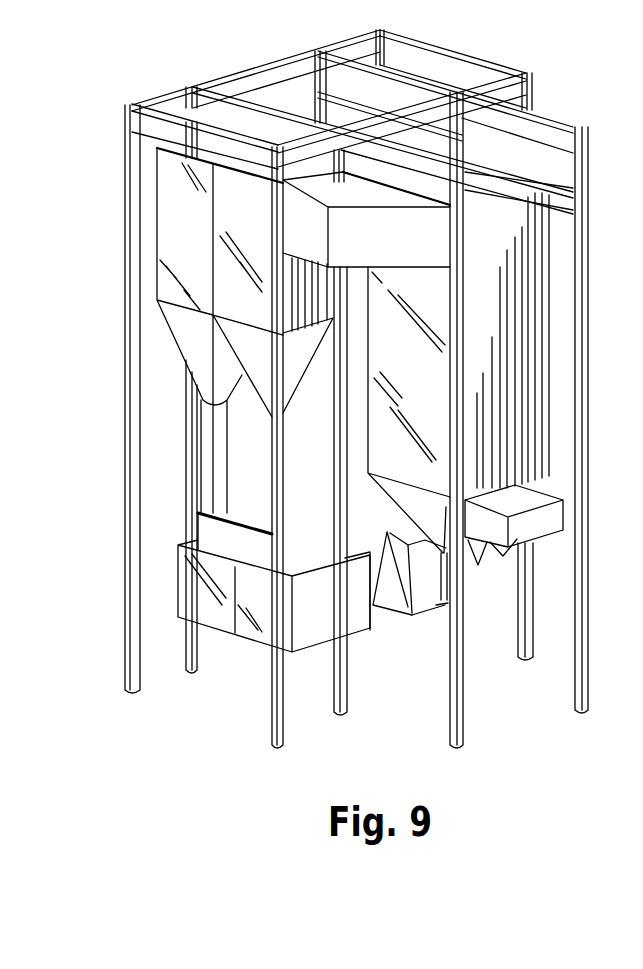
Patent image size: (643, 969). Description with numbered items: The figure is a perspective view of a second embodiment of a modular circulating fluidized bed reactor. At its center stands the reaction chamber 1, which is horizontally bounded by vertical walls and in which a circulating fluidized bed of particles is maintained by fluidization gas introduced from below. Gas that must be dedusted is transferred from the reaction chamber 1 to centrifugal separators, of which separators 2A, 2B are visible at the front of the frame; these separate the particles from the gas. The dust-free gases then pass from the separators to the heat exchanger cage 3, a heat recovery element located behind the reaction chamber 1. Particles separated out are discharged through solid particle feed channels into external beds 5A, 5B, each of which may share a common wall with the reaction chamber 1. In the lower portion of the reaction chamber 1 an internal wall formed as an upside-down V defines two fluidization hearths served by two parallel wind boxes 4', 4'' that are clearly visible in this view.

The reaction chamber 1 is at (368, 508).
The centrifugal separator 2A is at (180, 247).
The centrifugal separator 2B is at (237, 203).
The heat exchanger cage 3 is at (525, 303).
The wind box 4' is at (378, 610).
The wind box 4'' is at (427, 614).
The external bed 5A is at (197, 596).
The external bed 5B is at (260, 607).